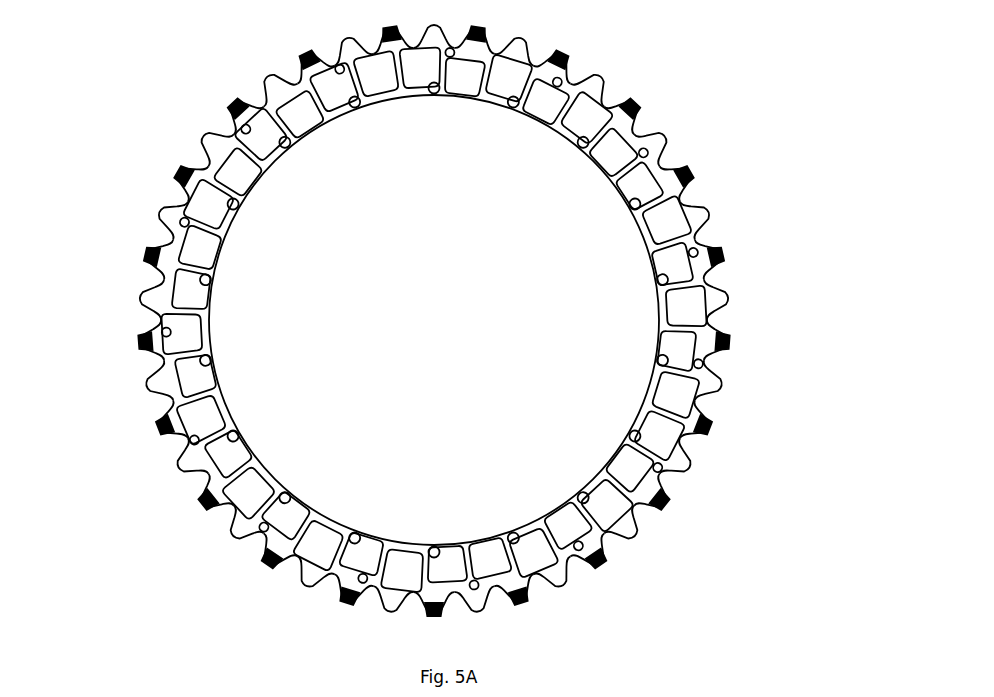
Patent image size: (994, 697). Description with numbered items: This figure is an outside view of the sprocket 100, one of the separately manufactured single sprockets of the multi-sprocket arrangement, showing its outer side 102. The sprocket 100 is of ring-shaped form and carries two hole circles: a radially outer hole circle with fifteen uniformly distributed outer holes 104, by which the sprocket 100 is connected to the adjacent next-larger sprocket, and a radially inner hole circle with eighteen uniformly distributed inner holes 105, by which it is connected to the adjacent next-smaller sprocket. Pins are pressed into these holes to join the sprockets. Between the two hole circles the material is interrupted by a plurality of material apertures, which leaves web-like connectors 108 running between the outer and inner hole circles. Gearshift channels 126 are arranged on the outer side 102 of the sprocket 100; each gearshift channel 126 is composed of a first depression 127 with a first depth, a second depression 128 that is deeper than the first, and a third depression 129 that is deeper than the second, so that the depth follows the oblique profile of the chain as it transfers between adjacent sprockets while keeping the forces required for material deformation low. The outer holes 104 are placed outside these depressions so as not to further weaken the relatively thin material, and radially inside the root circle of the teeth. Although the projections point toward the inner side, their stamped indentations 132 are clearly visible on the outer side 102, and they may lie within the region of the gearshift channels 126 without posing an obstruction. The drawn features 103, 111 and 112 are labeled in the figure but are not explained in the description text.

The sprocket 100 is at (767, 140).
The outer side 102 is at (717, 330).
The cutout opening 103 is at (315, 543).
The outer holes 104 is at (660, 467).
The inner holes 105 is at (613, 432).
The web-like connectors 108 is at (340, 563).
The wide tooth 111 is at (187, 175).
The narrow tooth 112 is at (160, 213).
The gearshift channels 126 is at (731, 98).
The first depression 127 is at (640, 123).
The second depression 128 is at (613, 110).
The third depression 129 is at (593, 107).
The stamped indentations 132 is at (720, 255).